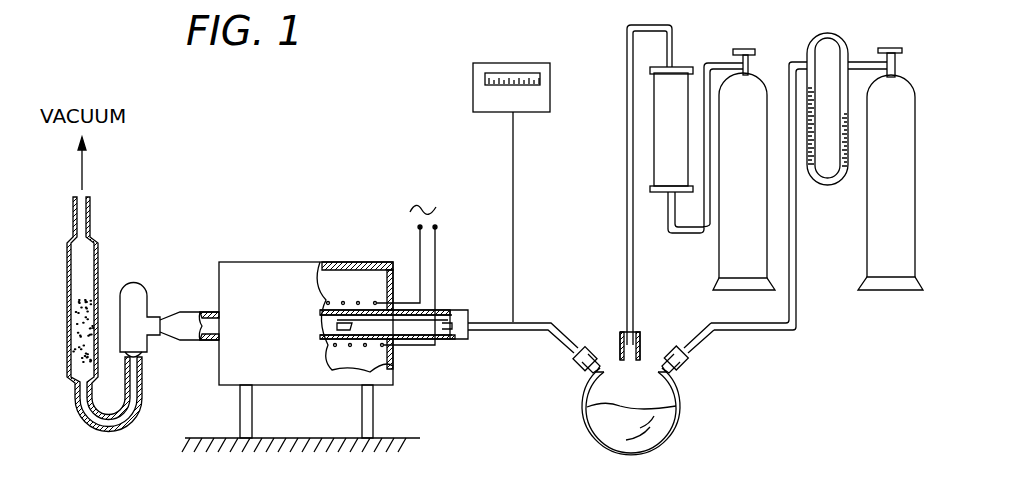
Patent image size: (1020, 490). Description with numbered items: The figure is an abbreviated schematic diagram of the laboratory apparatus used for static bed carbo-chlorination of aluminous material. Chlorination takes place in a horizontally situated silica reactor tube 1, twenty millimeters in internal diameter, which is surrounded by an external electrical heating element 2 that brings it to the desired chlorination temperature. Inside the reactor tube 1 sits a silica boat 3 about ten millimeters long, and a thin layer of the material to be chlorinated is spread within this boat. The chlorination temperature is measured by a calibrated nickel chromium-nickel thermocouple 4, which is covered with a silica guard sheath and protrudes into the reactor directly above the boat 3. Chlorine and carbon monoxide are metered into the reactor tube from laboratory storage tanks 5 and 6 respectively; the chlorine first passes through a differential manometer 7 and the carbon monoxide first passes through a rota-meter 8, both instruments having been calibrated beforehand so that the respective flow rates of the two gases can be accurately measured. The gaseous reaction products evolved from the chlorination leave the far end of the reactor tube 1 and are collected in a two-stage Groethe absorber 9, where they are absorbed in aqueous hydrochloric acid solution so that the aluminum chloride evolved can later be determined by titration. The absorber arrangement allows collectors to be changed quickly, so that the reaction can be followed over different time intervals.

The silica reactor tube 1 is at (448, 310).
The external electrical heating element 2 is at (420, 243).
The silica boat 3 is at (338, 330).
The thermocouple 4 is at (516, 207).
The laboratory storage tank 5 is at (867, 253).
The laboratory storage tank 6 is at (719, 262).
The differential manometer 7 is at (822, 33).
The rota-meter 8 is at (683, 67).
The two-stage Groethe absorber 9 is at (70, 337).